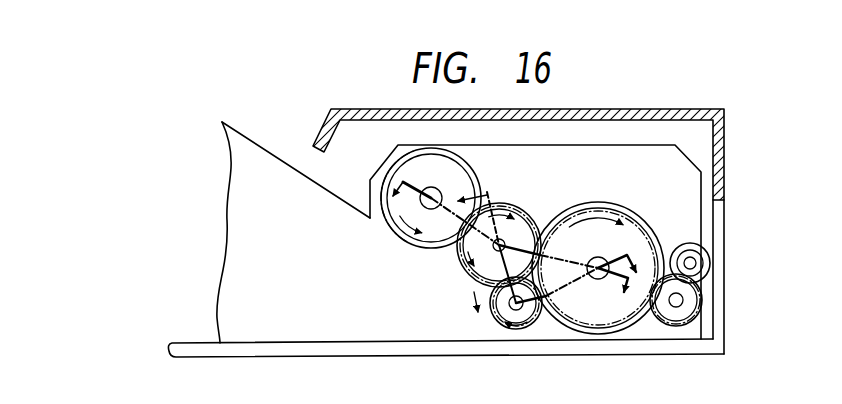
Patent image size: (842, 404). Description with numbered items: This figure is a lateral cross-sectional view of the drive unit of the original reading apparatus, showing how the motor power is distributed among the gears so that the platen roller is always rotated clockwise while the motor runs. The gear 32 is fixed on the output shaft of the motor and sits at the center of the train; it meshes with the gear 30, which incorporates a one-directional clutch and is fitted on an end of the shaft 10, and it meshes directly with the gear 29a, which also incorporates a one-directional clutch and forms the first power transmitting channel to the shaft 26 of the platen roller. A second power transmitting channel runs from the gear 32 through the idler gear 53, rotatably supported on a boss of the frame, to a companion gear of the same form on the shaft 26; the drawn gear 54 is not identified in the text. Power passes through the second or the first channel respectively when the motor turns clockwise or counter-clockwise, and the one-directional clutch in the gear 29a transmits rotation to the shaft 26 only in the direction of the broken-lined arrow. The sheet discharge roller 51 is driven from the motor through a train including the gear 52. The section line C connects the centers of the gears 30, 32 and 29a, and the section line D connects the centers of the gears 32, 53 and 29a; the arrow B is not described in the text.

The shaft 10 is at (435, 187).
The shaft 26 is at (592, 284).
The gear 29a is at (612, 318).
The gear 30 is at (412, 168).
The gear 32 is at (530, 214).
The discharge roller 51 is at (688, 305).
The gear 52 is at (698, 264).
The idler gear 53 is at (492, 315).
The small roller 54 is at (515, 308).
The direction B is at (470, 272).
The line C— C is at (517, 244).
The line D— D is at (553, 225).